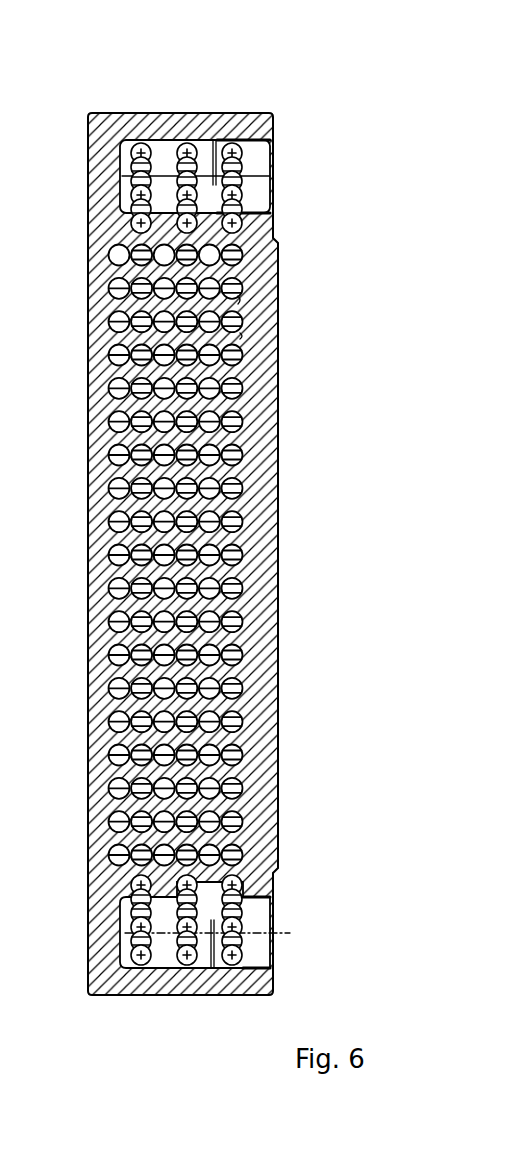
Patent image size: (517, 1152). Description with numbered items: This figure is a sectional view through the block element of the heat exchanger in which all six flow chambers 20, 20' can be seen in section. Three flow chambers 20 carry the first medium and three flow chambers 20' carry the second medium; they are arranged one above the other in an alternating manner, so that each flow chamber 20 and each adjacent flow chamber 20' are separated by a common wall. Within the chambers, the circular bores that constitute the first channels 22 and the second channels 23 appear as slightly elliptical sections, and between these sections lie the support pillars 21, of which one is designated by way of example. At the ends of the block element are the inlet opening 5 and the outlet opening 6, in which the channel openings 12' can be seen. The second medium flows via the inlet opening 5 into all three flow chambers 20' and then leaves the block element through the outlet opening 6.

The inlet opening 5 is at (268, 953).
The outlet opening 6 is at (268, 153).
The channel openings 12' is at (187, 534).
The flow chamber 20 is at (179, 546).
The flow chamber 20' is at (206, 556).
The support pillar 21 is at (240, 205).
The first channel 22 is at (238, 300).
The second channel 23 is at (240, 336).